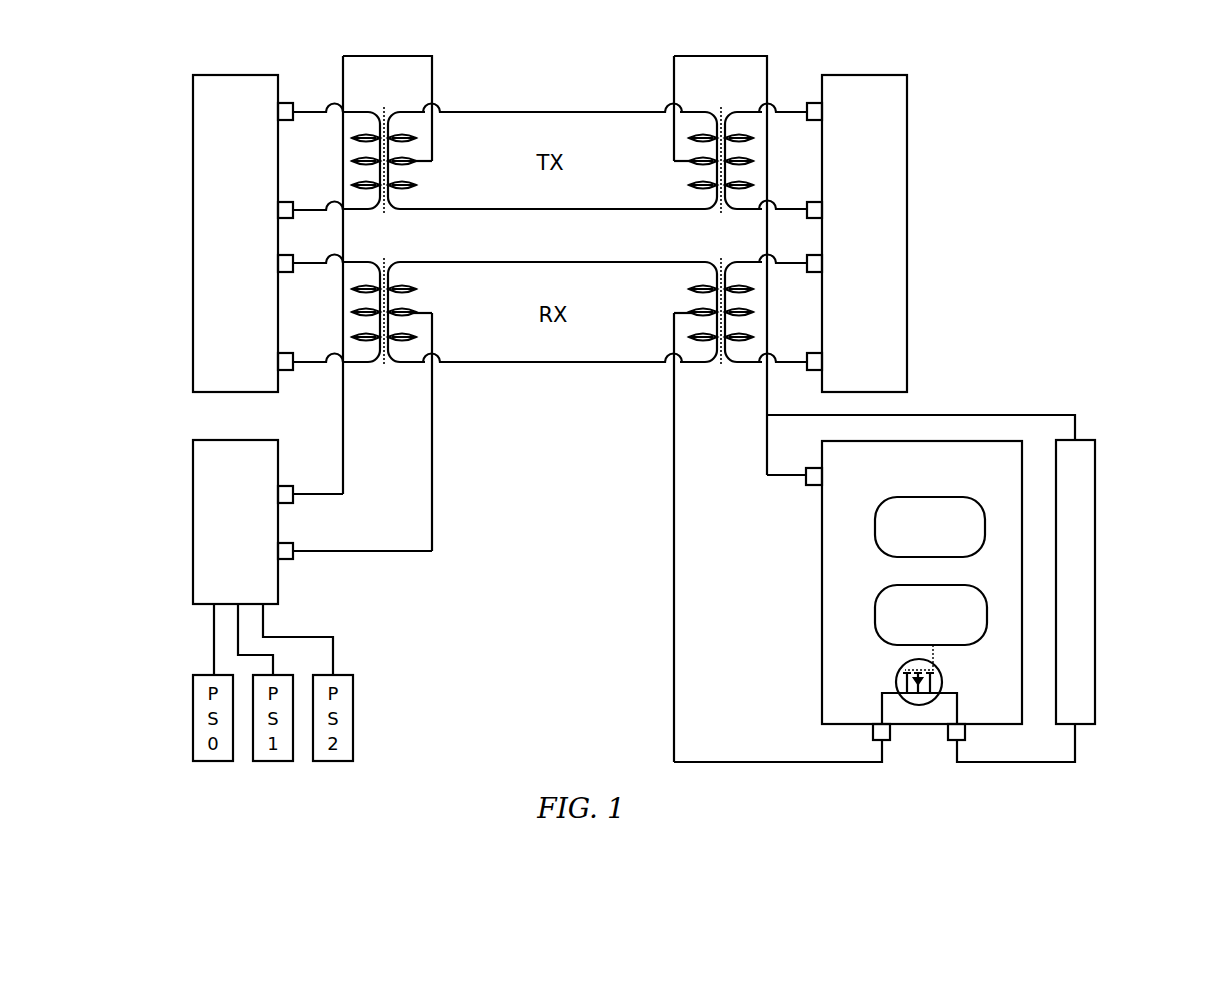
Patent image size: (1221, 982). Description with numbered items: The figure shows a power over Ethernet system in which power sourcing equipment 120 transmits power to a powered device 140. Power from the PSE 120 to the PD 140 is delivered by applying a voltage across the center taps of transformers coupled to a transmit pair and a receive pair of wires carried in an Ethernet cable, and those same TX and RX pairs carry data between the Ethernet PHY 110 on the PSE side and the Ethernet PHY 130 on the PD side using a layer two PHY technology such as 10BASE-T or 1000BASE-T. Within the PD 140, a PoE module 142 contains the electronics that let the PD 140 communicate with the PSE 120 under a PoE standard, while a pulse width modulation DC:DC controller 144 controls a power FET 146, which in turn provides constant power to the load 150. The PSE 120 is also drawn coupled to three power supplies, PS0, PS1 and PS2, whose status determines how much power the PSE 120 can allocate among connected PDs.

The Ethernet PHY 110 is at (193, 233).
The power sourcing equipment 120 is at (193, 521).
The Ethernet PHY 130 is at (907, 232).
The powered device 140 is at (889, 590).
The PoE module 142 is at (906, 497).
The pulse width modulation DC:DC controller 144 is at (885, 585).
The power FET 146 is at (897, 685).
The load 150 is at (1095, 573).